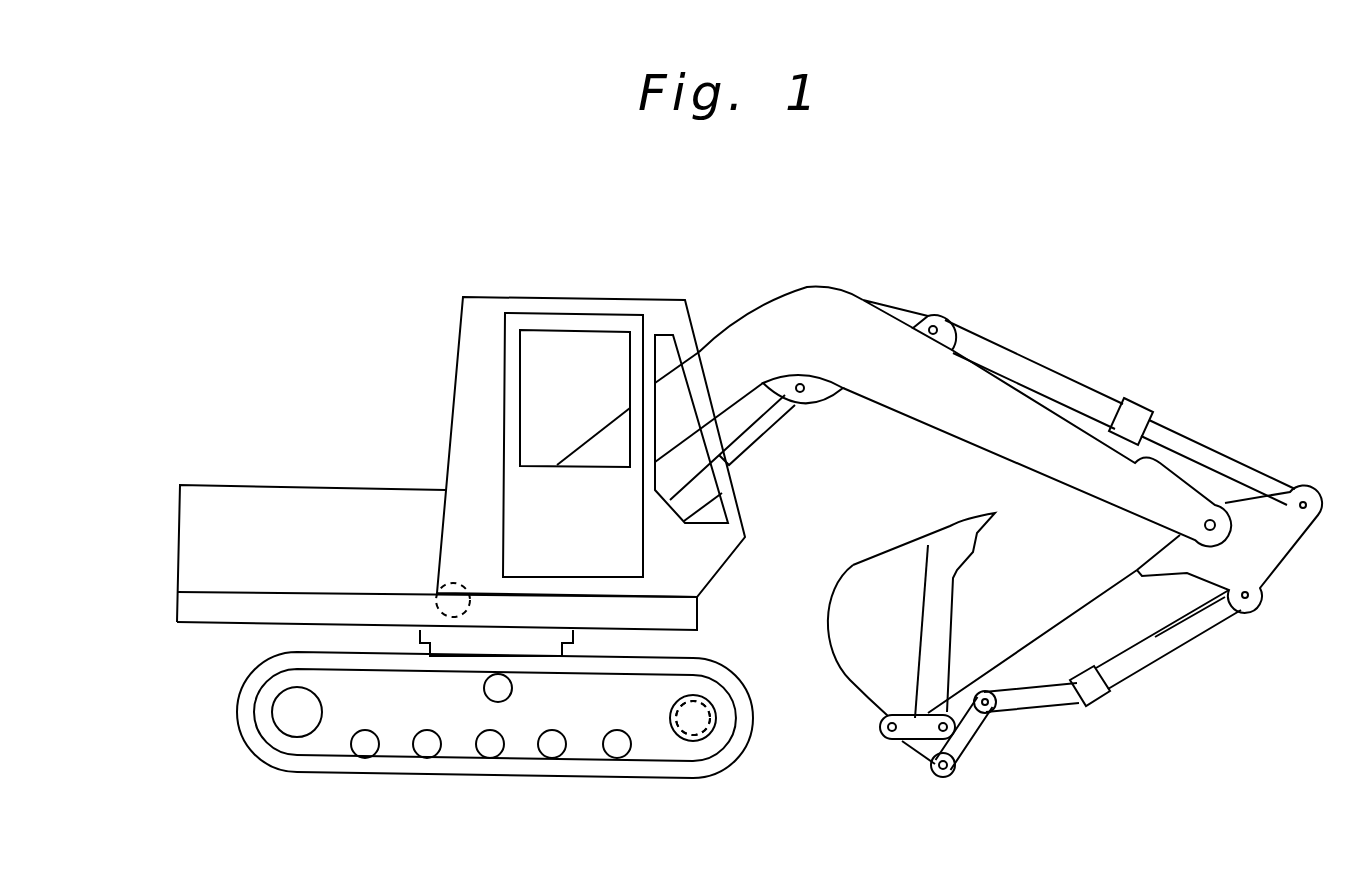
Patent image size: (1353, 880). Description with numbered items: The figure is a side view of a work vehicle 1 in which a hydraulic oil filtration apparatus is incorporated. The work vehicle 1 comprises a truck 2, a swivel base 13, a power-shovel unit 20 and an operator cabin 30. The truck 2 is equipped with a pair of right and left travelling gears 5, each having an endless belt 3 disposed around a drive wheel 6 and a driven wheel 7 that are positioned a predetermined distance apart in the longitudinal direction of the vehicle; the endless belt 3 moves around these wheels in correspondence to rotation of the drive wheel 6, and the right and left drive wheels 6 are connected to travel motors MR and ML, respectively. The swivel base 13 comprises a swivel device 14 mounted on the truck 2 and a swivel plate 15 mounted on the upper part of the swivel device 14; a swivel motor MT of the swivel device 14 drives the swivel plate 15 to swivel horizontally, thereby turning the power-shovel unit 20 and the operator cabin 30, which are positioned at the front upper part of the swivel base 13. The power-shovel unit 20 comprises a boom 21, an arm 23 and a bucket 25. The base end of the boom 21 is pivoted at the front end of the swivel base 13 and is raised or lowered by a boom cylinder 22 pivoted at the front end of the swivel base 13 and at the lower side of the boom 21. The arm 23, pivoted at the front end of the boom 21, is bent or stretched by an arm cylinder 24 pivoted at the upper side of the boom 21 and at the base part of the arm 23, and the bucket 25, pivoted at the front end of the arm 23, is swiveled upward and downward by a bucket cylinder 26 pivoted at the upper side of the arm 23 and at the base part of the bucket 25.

The work vehicle 1 is at (889, 244).
The truck 2 is at (238, 688).
The endless belt 3 is at (746, 747).
The travelling gear 5 is at (727, 662).
The drive wheel 6 is at (713, 746).
The driven wheel 7 is at (291, 747).
The swivel base 13 is at (174, 606).
The swivel device 14 is at (577, 638).
The swivel plate 15 is at (698, 610).
The power-shovel unit 20 is at (1014, 341).
The boom 21 is at (779, 305).
The boom cylinder 22 is at (767, 432).
The arm 23 is at (1077, 627).
The arm cylinder 24 is at (1072, 386).
The bucket 25 is at (946, 625).
The bucket cylinder 26 is at (1053, 707).
The operator cabin 30 is at (562, 297).
The swivel motor MT is at (462, 580).
The travel motor ML is at (684, 735).
The travel motor MR is at (671, 776).